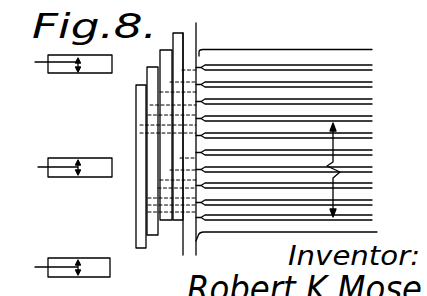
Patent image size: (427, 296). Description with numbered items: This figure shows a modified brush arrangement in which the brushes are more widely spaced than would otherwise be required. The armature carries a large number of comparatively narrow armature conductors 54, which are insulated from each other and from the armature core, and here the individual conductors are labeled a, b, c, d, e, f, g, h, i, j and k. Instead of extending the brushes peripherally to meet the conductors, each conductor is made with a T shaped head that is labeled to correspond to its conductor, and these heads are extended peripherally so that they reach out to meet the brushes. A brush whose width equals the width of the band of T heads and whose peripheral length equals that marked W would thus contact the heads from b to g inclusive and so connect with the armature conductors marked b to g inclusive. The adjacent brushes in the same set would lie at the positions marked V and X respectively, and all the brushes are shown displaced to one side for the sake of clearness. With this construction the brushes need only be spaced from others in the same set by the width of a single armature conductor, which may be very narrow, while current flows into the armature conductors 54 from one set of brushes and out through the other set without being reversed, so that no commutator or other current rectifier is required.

The armature conductors 54 is at (303, 86).
The armature conductor a is at (373, 229).
The armature conductor b is at (373, 213).
The armature conductor c is at (373, 198).
The armature conductor d is at (373, 181).
The armature conductor e is at (373, 165).
The armature conductor f is at (374, 149).
The armature conductor g is at (376, 131).
The armature conductor h is at (379, 112).
The armature conductor i is at (380, 94).
The armature conductor j is at (382, 77).
The armature conductor k is at (387, 56).
The brush position x X is at (63, 64).
The brush of peripheral length w W is at (61, 169).
The brush position v V is at (62, 268).